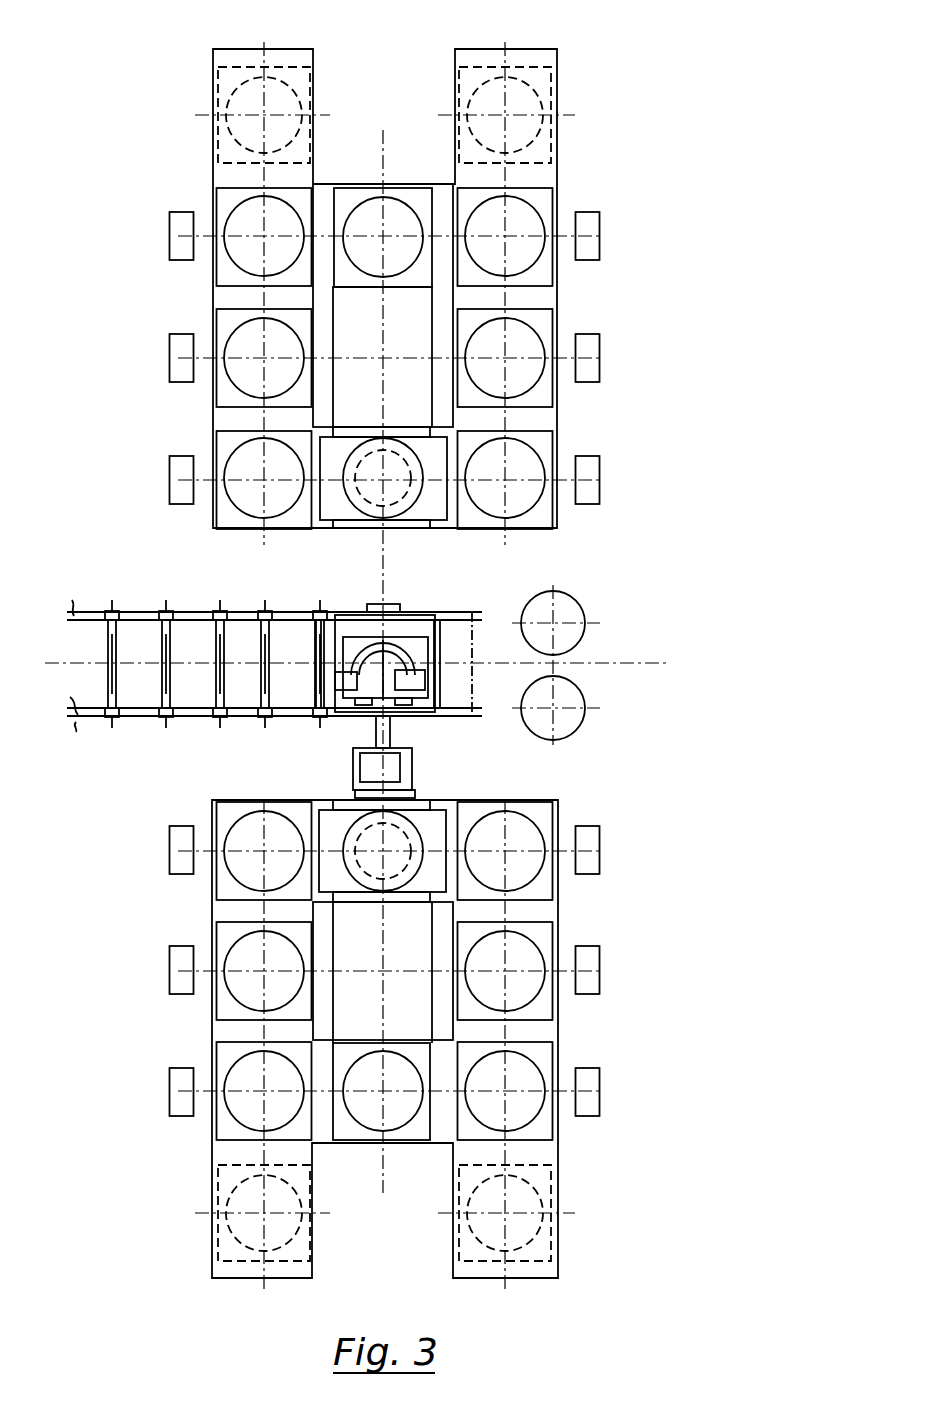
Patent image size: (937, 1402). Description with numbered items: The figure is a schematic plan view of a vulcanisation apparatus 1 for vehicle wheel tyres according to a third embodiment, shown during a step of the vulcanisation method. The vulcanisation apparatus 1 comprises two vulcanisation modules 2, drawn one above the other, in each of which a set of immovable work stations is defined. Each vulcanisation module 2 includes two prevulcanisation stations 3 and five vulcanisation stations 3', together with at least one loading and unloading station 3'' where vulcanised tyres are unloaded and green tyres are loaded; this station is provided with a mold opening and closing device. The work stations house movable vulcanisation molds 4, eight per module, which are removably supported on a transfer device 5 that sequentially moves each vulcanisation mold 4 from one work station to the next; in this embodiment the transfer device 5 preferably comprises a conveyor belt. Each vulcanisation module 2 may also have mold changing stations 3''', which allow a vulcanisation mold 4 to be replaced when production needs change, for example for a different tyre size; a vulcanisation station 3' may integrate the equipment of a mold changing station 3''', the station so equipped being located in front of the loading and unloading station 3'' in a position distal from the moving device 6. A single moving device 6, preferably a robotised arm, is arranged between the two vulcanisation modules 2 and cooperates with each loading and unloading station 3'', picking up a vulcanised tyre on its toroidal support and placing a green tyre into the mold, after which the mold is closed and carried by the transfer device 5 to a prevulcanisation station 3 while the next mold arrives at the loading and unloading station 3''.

The vulcanisation apparatus 1 is at (694, 97).
The vulcanisation module 2 is at (405, 683).
The prevulcanisation station 3 is at (394, 665).
The vulcanisation station 3' is at (390, 652).
The loading and unloading station 3'' is at (381, 664).
The mold changing station 3''' is at (424, 683).
The vulcanisation mold 4 is at (253, 347).
The transfer device 5 is at (540, 300).
The moving device 6 is at (514, 751).